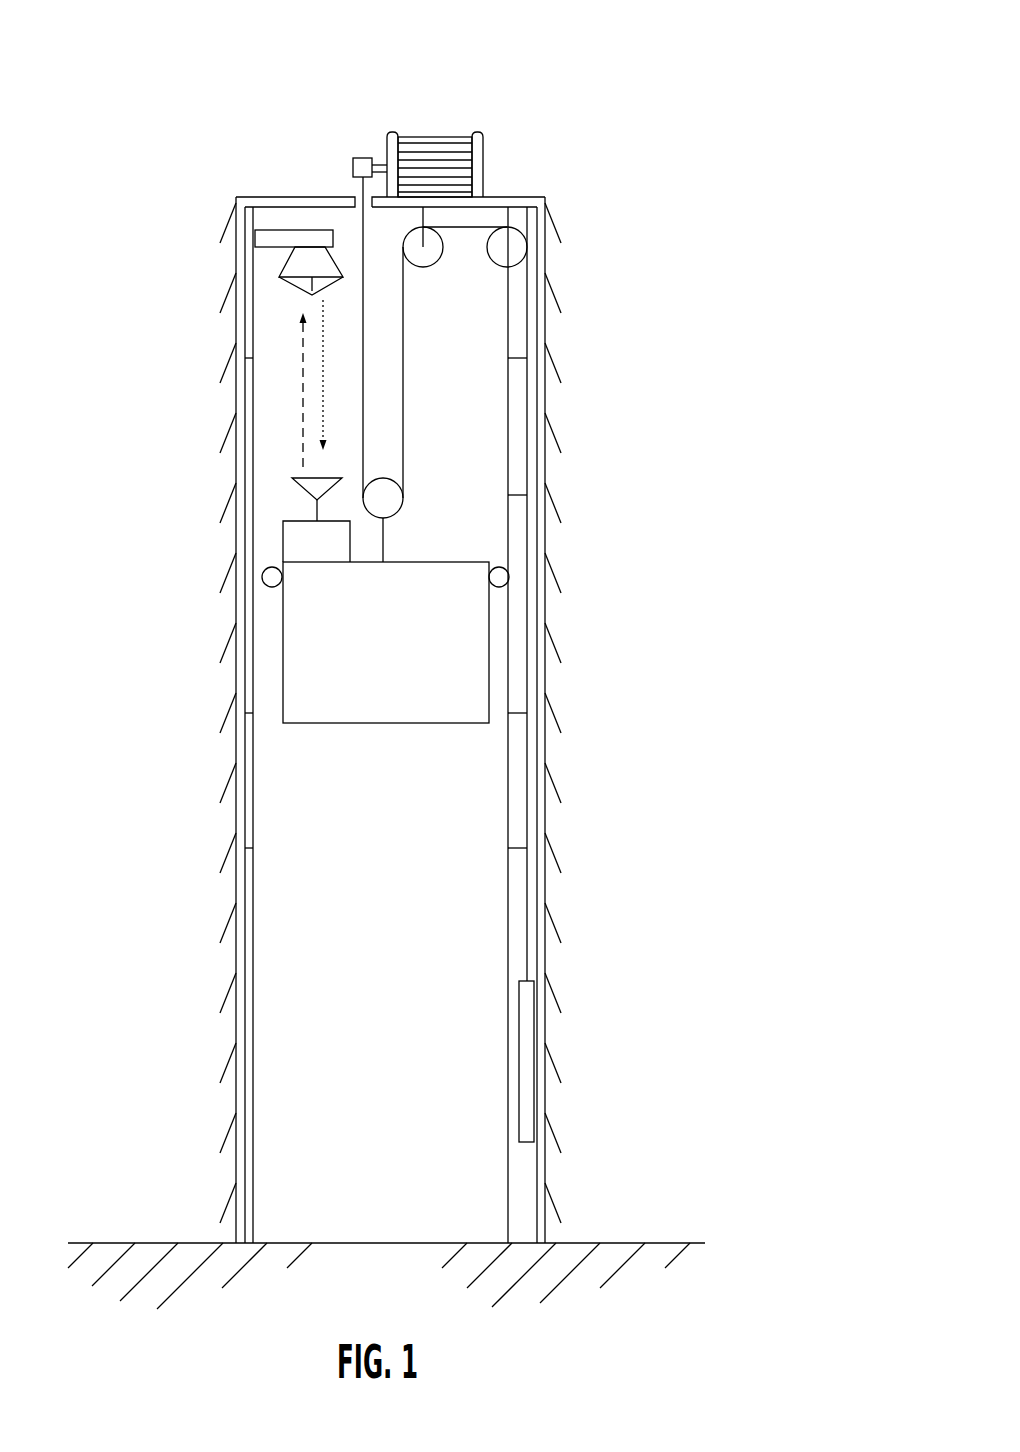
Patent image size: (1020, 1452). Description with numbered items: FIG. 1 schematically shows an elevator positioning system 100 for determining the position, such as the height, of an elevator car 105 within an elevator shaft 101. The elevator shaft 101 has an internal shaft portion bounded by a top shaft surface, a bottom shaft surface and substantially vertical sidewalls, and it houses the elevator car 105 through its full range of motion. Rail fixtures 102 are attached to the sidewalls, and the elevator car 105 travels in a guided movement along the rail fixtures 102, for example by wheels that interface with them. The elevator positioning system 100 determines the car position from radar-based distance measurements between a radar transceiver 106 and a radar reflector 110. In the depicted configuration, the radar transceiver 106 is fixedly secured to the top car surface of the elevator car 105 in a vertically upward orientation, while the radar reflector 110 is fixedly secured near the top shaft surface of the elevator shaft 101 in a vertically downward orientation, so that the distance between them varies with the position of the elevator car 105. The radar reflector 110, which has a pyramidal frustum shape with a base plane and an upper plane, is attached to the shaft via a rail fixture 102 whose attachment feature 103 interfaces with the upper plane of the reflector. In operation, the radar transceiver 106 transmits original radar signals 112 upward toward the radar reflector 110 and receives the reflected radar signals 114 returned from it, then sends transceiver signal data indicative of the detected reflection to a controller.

The elevator positioning system 100 is at (667, 87).
The elevator shaft 101 is at (562, 156).
The rail fixture 102 is at (250, 983).
The attachment feature 103 is at (286, 225).
The elevator car 105 is at (472, 688).
The radar transceiver 106 is at (276, 493).
The radar reflector 110 is at (276, 254).
The original radar signals 112 is at (287, 400).
The reflected radar signals 114 is at (327, 348).